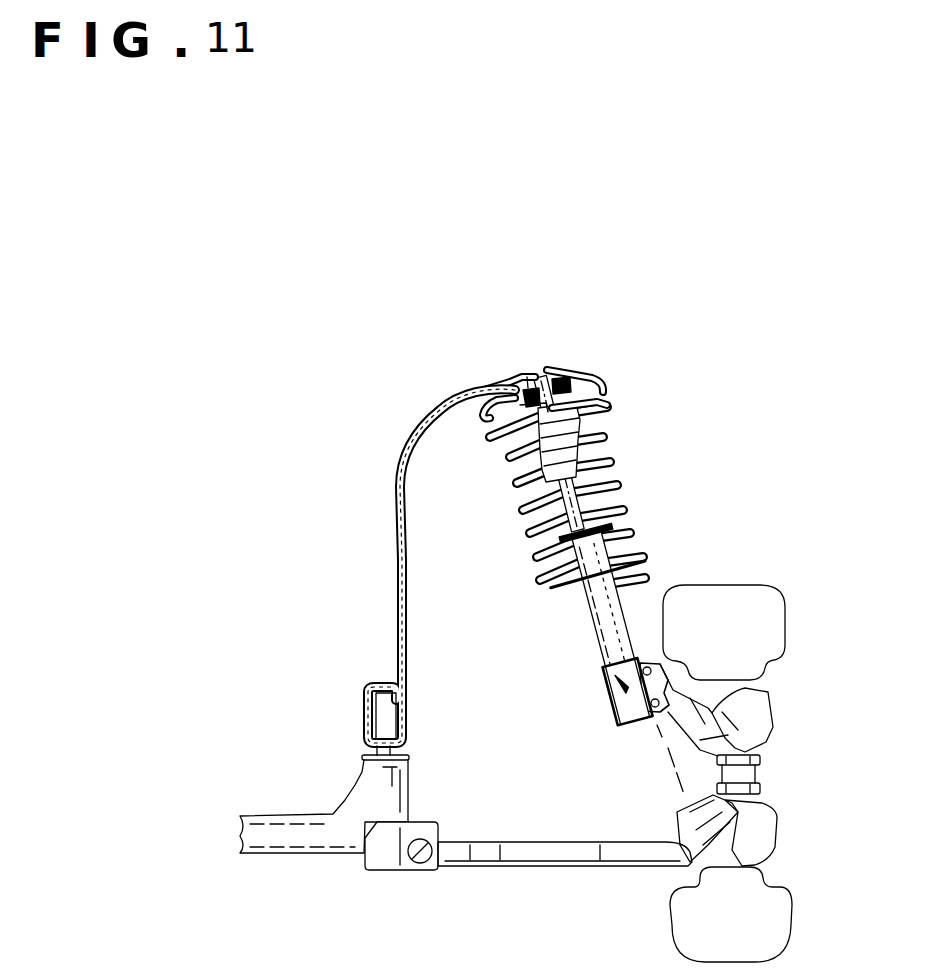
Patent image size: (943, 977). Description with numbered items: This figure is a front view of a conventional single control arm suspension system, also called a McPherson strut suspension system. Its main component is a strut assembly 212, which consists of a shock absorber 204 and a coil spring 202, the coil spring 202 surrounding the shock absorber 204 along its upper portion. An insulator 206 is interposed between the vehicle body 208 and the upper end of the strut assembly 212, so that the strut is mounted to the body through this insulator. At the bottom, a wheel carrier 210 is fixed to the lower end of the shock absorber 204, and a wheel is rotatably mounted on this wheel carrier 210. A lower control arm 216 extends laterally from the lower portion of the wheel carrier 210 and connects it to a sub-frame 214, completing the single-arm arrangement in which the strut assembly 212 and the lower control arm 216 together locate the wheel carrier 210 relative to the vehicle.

The coil spring 202 is at (609, 455).
The shock absorber 204 is at (607, 532).
The insulator 206 is at (568, 384).
The vehicle body 208 is at (397, 513).
The wheel carrier 210 is at (755, 693).
The strut assembly 212 is at (722, 408).
The sub-frame 214 is at (300, 838).
The lower control arm 216 is at (510, 853).